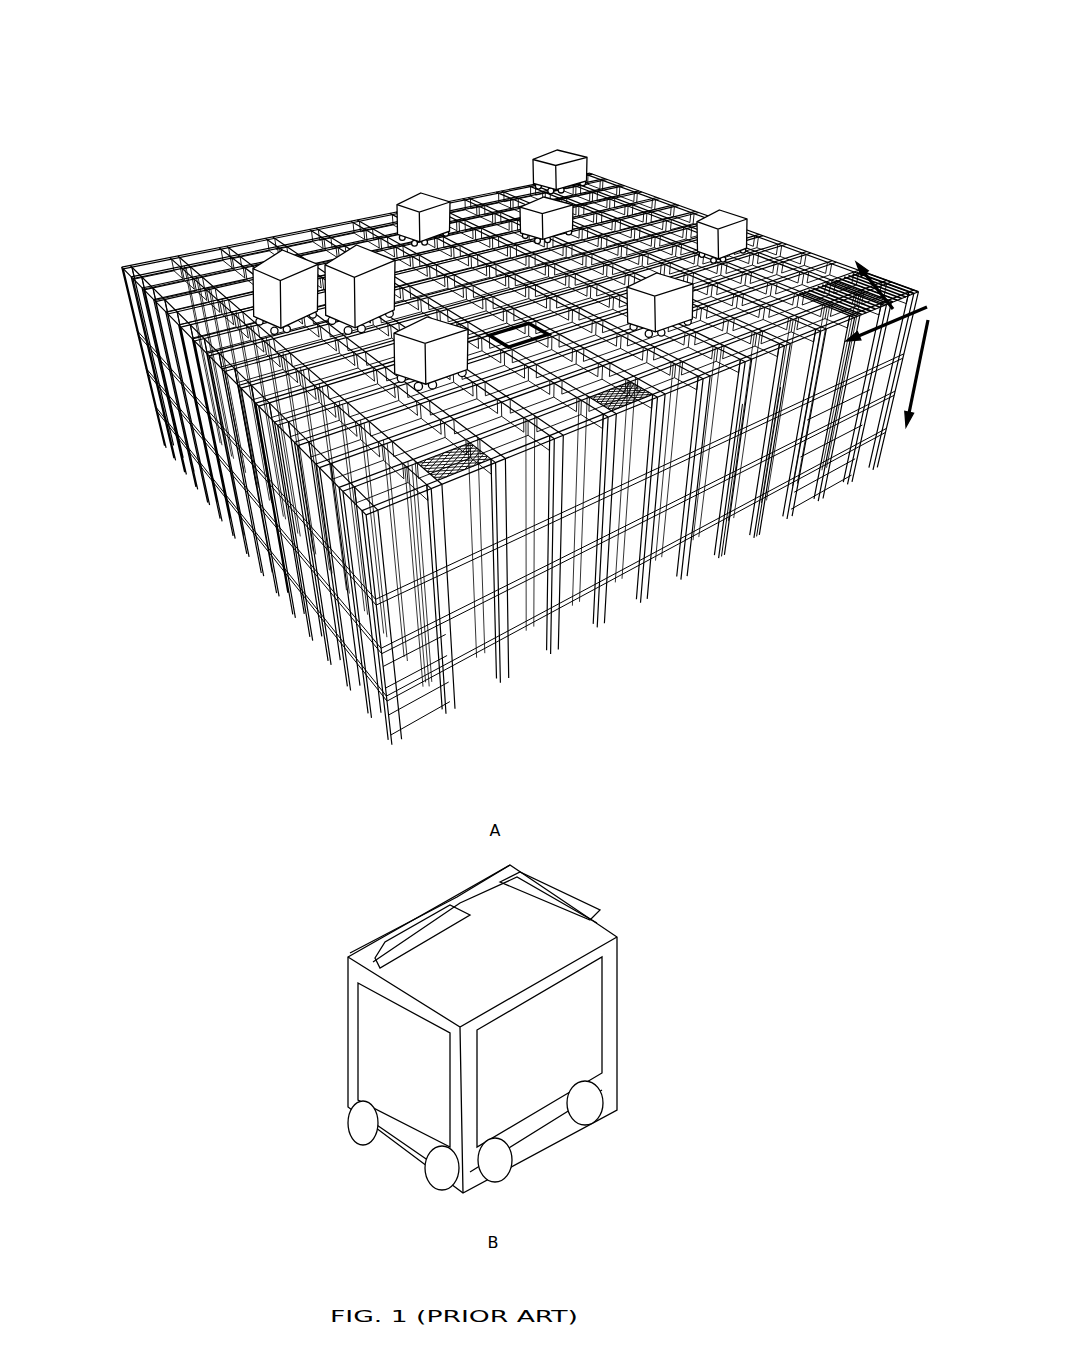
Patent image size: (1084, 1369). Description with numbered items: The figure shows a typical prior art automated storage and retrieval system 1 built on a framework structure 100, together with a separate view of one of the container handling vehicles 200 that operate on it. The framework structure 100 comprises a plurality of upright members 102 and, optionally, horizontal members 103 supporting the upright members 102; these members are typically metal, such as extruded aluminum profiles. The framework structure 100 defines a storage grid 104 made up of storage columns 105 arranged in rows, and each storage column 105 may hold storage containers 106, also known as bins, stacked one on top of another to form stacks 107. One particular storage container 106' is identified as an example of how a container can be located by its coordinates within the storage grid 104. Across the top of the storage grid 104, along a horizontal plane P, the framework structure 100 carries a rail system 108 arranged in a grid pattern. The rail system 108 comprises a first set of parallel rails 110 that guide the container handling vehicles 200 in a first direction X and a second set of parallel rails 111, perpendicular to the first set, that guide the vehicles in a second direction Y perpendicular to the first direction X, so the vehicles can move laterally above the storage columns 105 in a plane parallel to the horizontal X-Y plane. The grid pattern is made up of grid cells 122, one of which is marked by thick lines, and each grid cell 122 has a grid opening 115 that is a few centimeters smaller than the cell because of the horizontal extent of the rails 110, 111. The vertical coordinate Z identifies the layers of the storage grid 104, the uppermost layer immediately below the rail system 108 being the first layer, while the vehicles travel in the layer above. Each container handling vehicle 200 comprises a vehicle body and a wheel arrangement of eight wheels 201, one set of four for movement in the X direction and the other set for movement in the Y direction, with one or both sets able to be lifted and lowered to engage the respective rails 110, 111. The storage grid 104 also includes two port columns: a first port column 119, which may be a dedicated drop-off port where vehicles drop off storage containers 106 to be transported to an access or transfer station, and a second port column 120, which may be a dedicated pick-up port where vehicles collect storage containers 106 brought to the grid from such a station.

The automated storage and retrieval system 1 is at (465, 82).
The framework structure 100 is at (139, 422).
The upright members 102 is at (380, 623).
The horizontal members 103 is at (797, 500).
The storage grid 104 is at (120, 300).
The storage columns 105 is at (295, 531).
The storage containers 106 is at (510, 730).
The storage container 106' is at (528, 635).
The stacks 107 is at (860, 473).
The rail system 108 is at (846, 272).
The first set of parallel rails 110 is at (780, 291).
The second set of parallel rails 111 is at (369, 222).
The grid opening 115 is at (749, 272).
The first port column 119 is at (633, 407).
The second port column 120 is at (717, 478).
The grid cell 122 is at (521, 356).
The container handling vehicle 200 is at (583, 155).
The wheels 201 is at (316, 1094).
The horizontal plane P is at (871, 291).
The first direction X is at (886, 341).
The second direction Y is at (874, 277).
The vertical coordinate Z is at (914, 389).